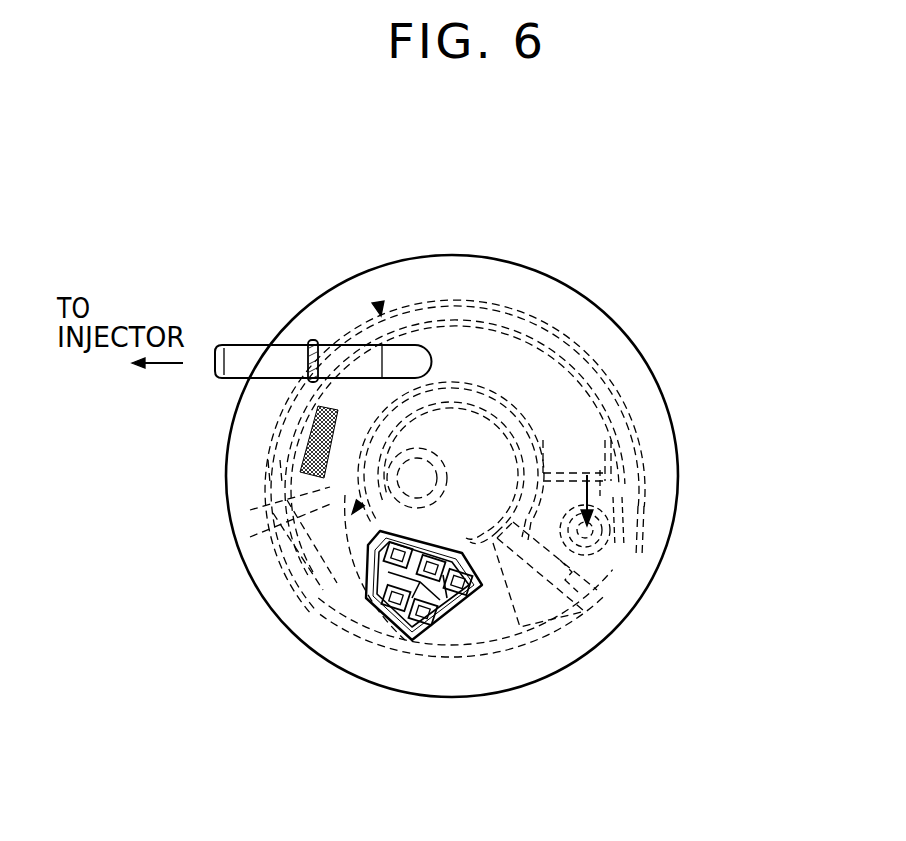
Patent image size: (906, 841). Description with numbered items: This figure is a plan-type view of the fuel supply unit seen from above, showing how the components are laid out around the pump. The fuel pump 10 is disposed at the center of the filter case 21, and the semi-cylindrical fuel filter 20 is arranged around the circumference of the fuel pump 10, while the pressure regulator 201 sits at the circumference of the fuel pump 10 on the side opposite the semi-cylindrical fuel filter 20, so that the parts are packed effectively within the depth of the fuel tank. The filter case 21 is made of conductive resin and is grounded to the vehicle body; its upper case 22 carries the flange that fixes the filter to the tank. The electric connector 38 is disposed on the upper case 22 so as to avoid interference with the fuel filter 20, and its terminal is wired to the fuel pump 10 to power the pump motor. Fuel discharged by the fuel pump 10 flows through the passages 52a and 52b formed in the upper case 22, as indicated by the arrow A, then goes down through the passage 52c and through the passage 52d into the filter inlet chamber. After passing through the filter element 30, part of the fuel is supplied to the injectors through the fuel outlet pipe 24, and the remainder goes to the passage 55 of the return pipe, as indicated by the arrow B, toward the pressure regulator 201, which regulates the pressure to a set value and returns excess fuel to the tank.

The fuel pump 10 is at (483, 442).
The fuel filter 20 is at (378, 305).
The filter case 21 is at (605, 385).
The upper case 22 is at (600, 308).
The fuel outlet pipe 24 is at (240, 360).
The filter element 30 is at (300, 437).
The electric connector 38 is at (440, 640).
The passage 52a is at (320, 642).
The passage 52b is at (250, 511).
The passage 52c is at (290, 560).
The passage 52d is at (250, 538).
The passage of the return pipe 55 is at (620, 532).
The pressure regulator 201 is at (600, 590).
The arrow A is at (385, 477).
The arrow B is at (588, 490).